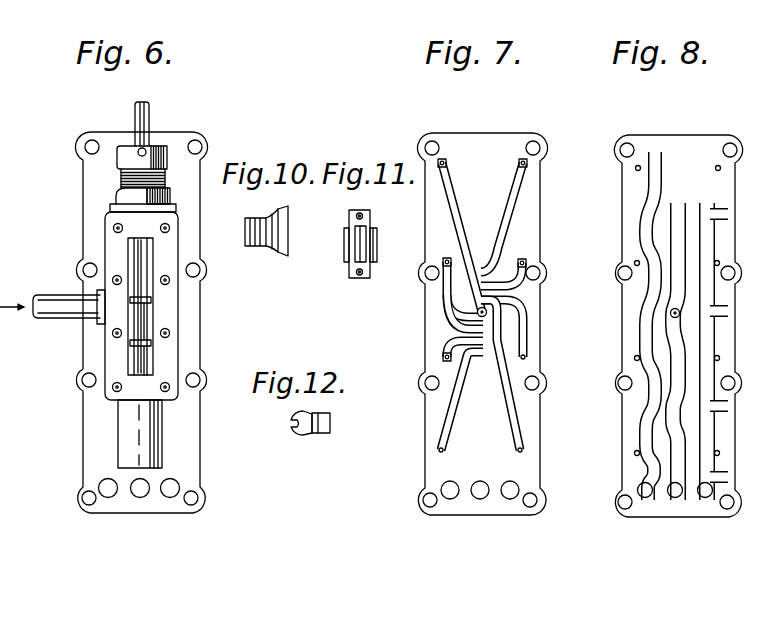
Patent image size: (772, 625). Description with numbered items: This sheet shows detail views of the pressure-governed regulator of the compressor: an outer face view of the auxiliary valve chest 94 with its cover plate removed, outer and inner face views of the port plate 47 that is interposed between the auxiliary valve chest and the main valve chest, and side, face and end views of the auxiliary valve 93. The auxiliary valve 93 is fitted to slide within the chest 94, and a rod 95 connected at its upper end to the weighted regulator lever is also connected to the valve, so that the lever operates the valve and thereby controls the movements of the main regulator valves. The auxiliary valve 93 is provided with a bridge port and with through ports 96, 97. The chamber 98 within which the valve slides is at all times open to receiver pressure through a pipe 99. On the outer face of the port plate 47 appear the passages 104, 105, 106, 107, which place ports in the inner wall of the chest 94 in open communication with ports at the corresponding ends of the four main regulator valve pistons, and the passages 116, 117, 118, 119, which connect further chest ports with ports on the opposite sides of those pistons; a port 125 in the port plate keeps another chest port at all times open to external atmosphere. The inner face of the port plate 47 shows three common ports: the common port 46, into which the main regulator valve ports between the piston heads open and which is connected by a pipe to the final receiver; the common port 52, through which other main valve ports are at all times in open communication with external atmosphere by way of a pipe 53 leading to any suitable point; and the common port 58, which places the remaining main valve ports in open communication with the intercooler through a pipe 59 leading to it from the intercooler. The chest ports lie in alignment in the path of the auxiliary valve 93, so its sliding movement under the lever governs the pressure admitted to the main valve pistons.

In FIG. 8, the common port 46 is at (650, 217).
In FIG. 7, the port plate 47 is at (482, 324).
In FIG. 8, the port plate 47 is at (737, 338).
In FIG. 8, the common port 52 is at (678, 378).
In FIG. 6, the pipe 53 is at (140, 490).
In FIG. 7, the pipe 53 is at (480, 493).
In FIG. 8, the pipe 53 is at (675, 492).
In FIG. 8, the common port 58 is at (703, 430).
In FIG. 6, the pipe 59 is at (108, 490).
In FIG. 7, the pipe 59 is at (450, 493).
In FIG. 8, the pipe 59 is at (705, 492).
In FIG. 6, the auxiliary valve 93 is at (148, 318).
In FIG. 10, the auxiliary valve 93 is at (267, 240).
In FIG. 11, the auxiliary valve 93 is at (377, 245).
In FIG. 12, the auxiliary valve 93 is at (315, 433).
In FIG. 6, the auxiliary valve chest 94 is at (120, 428).
In FIG. 6, the rod 95 is at (149, 118).
In FIG. 11, the rod 95 is at (360, 240).
In FIG. 11, the through port 96 is at (356, 215).
In FIG. 11, the through port 97 is at (359, 275).
In FIG. 6, the chamber 98 is at (150, 358).
In FIG. 6, the pipe 99 is at (45, 295).
In FIG. 7, the passage 104 is at (508, 384).
In FIG. 7, the passage 105 is at (528, 327).
In FIG. 7, the passage 106 is at (510, 260).
In FIG. 7, the passage 107 is at (515, 213).
In FIG. 7, the passage 116 is at (448, 424).
In FIG. 7, the passage 117 is at (440, 356).
In FIG. 7, the passage 118 is at (450, 320).
In FIG. 7, the passage 119 is at (457, 218).
In FIG. 7, the port 125 is at (477, 311).
In FIG. 8, the port 125 is at (680, 313).